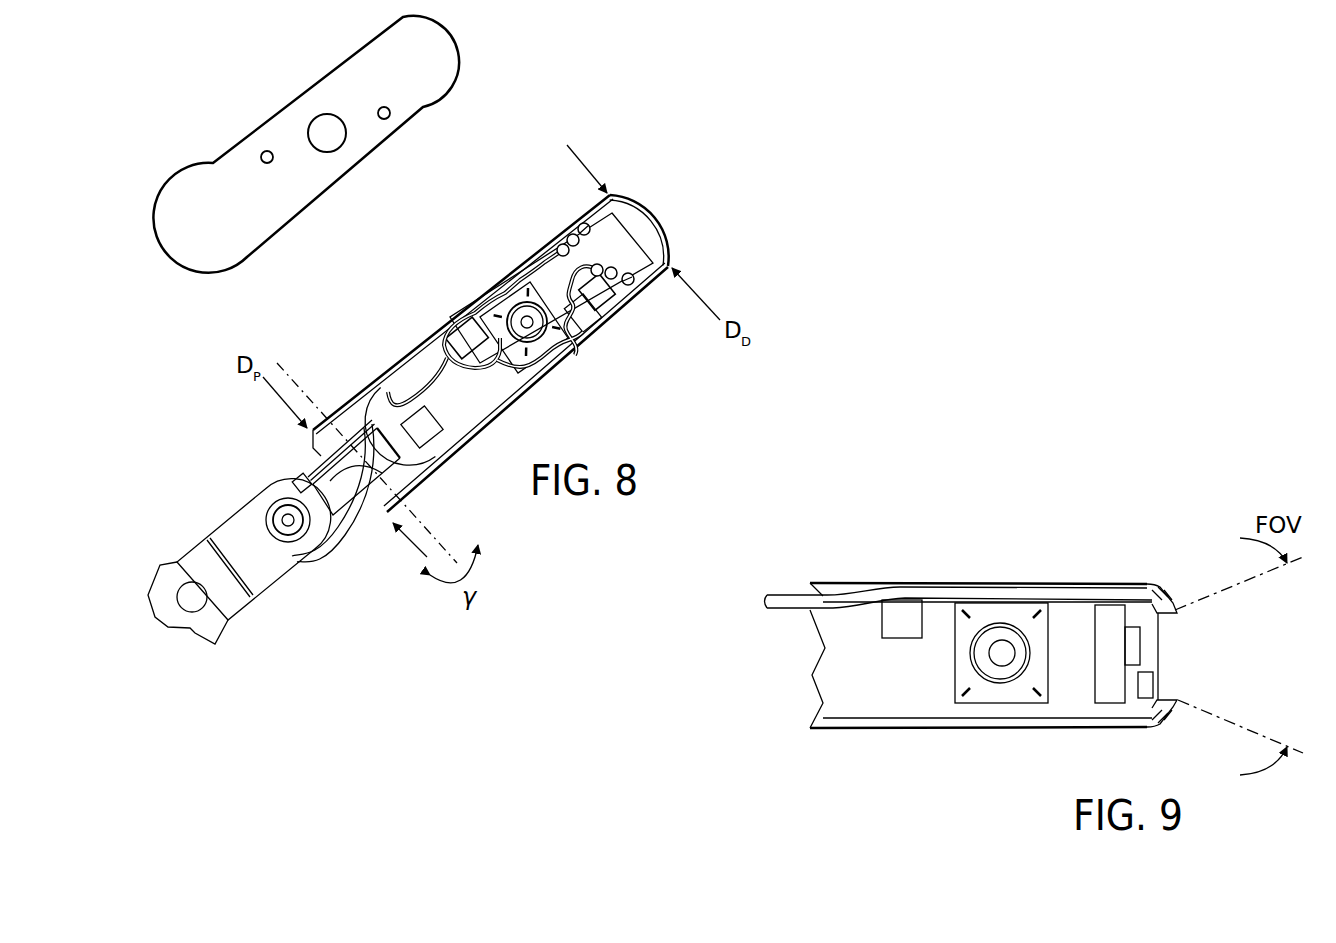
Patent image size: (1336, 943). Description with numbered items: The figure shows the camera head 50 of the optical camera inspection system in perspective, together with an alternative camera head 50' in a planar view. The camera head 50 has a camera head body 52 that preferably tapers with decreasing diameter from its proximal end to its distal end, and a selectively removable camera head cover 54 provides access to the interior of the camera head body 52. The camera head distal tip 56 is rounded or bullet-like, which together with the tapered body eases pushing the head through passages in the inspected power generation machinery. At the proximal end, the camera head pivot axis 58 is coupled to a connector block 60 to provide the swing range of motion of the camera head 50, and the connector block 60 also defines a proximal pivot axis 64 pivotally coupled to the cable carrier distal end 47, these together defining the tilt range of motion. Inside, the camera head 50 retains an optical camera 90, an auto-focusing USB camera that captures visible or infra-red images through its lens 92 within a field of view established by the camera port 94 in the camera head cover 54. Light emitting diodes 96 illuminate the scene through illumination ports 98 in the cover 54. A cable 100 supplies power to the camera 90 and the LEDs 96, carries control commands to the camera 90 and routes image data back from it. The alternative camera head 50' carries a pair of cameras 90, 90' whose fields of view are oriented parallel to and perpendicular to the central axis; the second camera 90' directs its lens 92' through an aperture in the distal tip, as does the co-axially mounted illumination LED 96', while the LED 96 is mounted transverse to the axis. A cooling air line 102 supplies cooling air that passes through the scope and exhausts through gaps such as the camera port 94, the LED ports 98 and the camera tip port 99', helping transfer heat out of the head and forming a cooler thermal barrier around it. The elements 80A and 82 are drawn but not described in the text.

In FIG. 8, the cable carrier distal end 47 is at (216, 528).
In FIG. 8, the camera head 50 is at (559, 312).
In FIG. 9, the alternative embodiment camera head 50' is at (993, 691).
In FIG. 8, the camera head body 52 is at (358, 400).
In FIG. 8, the camera head cover 54 is at (225, 192).
In FIG. 8, the camera head distal tip 56 is at (668, 237).
In FIG. 8, the camera head pivot axis 58 is at (308, 392).
In FIG. 8, the connector block 60 is at (387, 510).
In FIG. 8, the proximal pivot axis 64 is at (287, 527).
In FIG. 8, the shaft 80A is at (313, 467).
In FIG. 8, the shaft connector 82 is at (290, 483).
In FIG. 8, the optical camera 90 is at (551, 324).
In FIG. 9, the optical camera 90 is at (1001, 606).
In FIG. 9, the camera 90' is at (1117, 604).
In FIG. 8, the lens 92 is at (512, 272).
In FIG. 9, the lens 92 is at (1000, 703).
In FIG. 9, the lens 92' is at (1195, 646).
In FIG. 8, the camera port 94 is at (322, 128).
In FIG. 8, the light emitting diodes 96 is at (547, 302).
In FIG. 9, the light emitting diodes 96 is at (909, 578).
In FIG. 9, the illumination LED 96' is at (1197, 719).
In FIG. 8, the illumination ports 98 is at (272, 162).
In FIG. 9, the camera tip port 99' is at (1244, 655).
In FIG. 8, the cable 100 is at (325, 547).
In FIG. 9, the cooling air line 102 is at (790, 593).